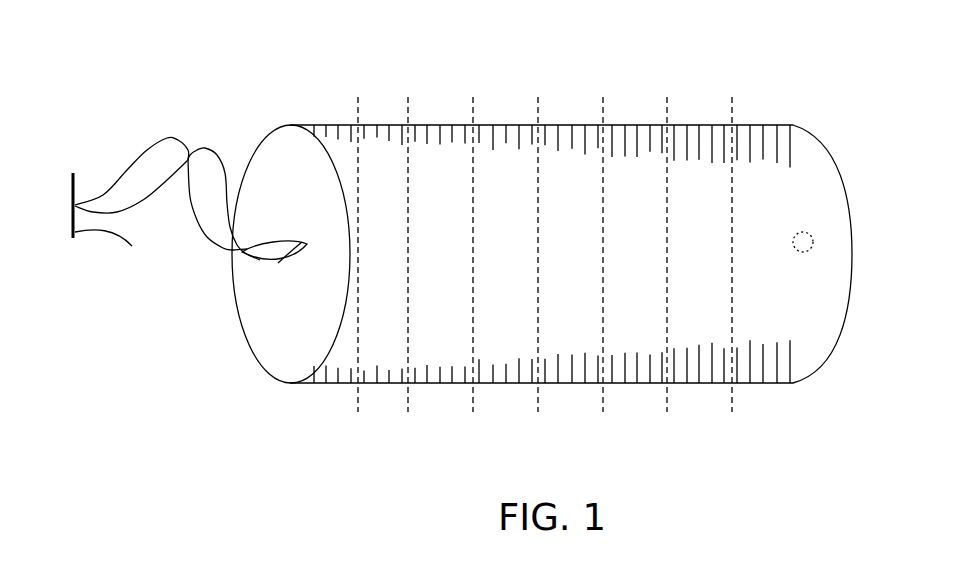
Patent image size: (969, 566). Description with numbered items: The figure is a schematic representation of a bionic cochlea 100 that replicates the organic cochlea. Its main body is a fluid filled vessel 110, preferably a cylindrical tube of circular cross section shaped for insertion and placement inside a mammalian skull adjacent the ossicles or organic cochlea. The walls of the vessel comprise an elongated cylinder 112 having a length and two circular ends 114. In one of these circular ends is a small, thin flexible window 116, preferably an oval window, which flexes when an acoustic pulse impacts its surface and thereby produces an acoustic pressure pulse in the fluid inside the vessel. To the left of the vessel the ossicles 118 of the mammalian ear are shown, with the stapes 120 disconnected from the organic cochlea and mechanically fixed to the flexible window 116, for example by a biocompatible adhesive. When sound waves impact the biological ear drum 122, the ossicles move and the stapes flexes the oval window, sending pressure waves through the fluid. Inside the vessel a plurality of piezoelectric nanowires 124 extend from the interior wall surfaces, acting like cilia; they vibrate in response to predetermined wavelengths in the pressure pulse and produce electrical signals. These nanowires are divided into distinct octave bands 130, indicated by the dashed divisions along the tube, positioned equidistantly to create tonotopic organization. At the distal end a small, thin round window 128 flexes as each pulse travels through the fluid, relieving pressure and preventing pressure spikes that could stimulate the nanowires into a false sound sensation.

The bionic cochlea 100 is at (218, 24).
The fluid filled vessel 110 is at (254, 148).
The elongated cylinder 112 is at (333, 385).
The circular ends 114 is at (262, 323).
The flexible window 116 is at (303, 248).
The ossicles 118 is at (138, 157).
The stapes 120 is at (263, 243).
The biological ear drum 122 is at (113, 252).
The piezoelectric nanowires 124 is at (507, 147).
The round window 128 is at (793, 249).
The octave bands 130 is at (335, 112).